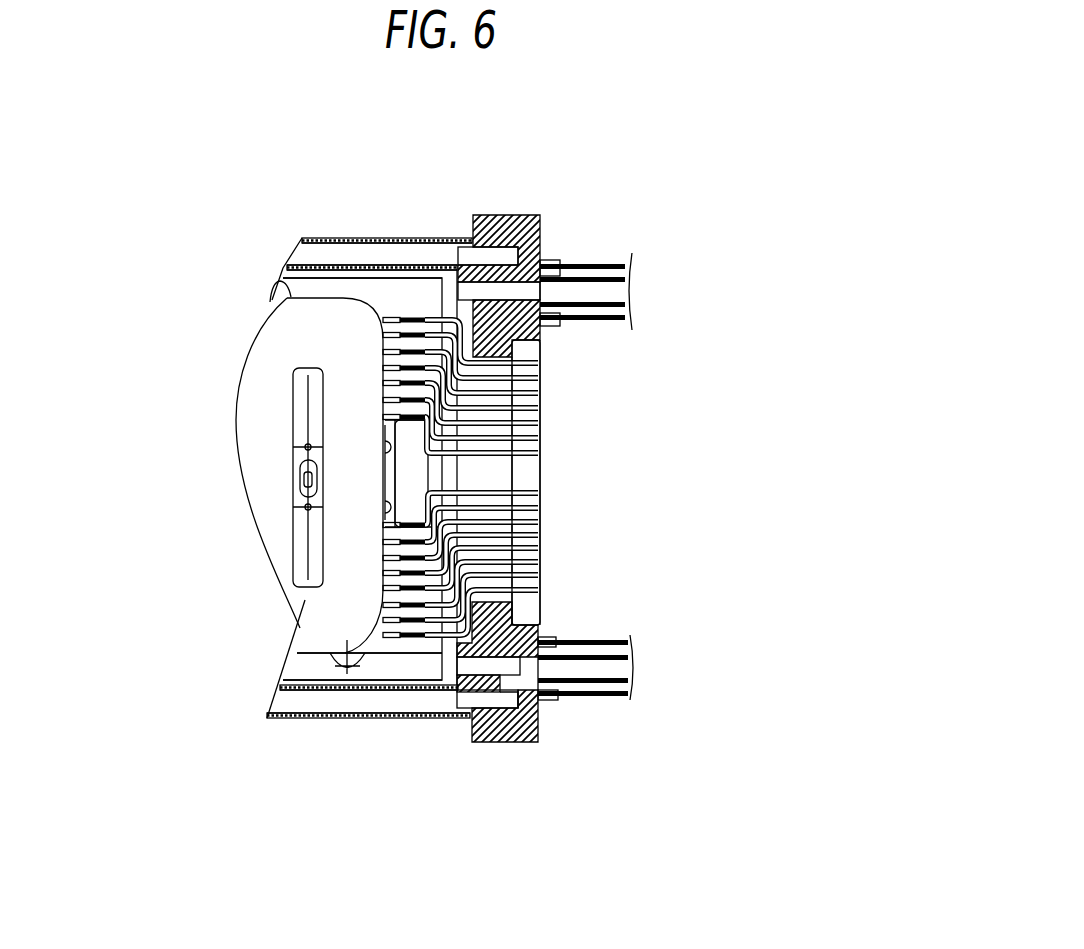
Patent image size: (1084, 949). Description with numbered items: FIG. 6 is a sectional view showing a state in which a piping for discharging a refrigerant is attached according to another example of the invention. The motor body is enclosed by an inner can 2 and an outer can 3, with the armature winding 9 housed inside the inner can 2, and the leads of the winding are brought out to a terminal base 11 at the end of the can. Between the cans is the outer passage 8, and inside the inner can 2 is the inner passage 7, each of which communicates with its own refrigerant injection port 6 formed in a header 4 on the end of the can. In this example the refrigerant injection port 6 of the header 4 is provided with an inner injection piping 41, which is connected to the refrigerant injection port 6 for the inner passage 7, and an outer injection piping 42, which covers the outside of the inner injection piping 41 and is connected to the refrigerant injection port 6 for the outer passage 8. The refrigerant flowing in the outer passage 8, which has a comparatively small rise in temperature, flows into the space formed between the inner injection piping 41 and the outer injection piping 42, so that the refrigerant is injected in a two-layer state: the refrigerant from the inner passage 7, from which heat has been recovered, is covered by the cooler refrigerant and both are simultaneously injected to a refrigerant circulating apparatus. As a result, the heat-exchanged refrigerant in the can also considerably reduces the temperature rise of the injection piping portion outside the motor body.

The inner can 2 is at (333, 265).
The outer can 3 is at (414, 238).
The header 4 is at (539, 729).
The refrigerant injection port 6 is at (495, 257).
The inner passage 7 is at (383, 665).
The outer passage 8 is at (437, 703).
The armature winding 9 is at (253, 436).
The terminal base 11 is at (532, 473).
The inner injection piping 41 is at (578, 274).
The outer injection piping 42 is at (610, 264).